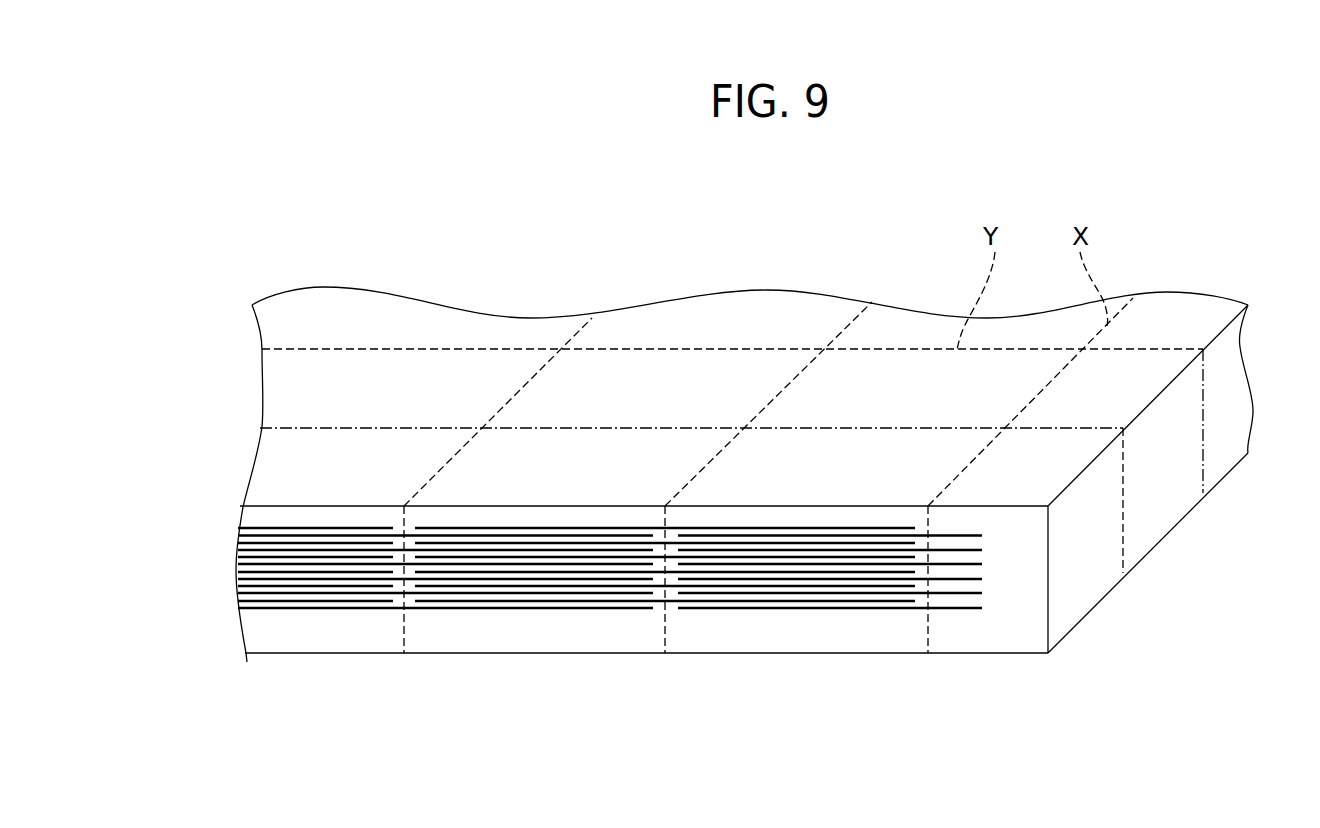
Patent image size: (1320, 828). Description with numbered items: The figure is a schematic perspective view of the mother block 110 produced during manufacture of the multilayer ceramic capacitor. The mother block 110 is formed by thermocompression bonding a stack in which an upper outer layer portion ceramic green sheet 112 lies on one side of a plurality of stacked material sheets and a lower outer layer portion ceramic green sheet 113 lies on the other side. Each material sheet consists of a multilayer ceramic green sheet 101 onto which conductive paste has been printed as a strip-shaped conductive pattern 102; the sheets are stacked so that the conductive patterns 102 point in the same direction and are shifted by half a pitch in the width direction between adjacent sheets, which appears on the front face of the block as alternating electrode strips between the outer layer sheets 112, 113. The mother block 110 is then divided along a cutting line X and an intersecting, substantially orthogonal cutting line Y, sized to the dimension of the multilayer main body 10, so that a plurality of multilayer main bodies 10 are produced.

The mother block 110 is at (857, 230).
The multilayer main body 10 is at (660, 370).
The multilayer ceramic green sheet 101 is at (913, 597).
The conductive pattern 102 is at (840, 527).
The upper outer layer portion ceramic green sheet 112 is at (277, 512).
The lower outer layer portion ceramic green sheet 113 is at (277, 633).